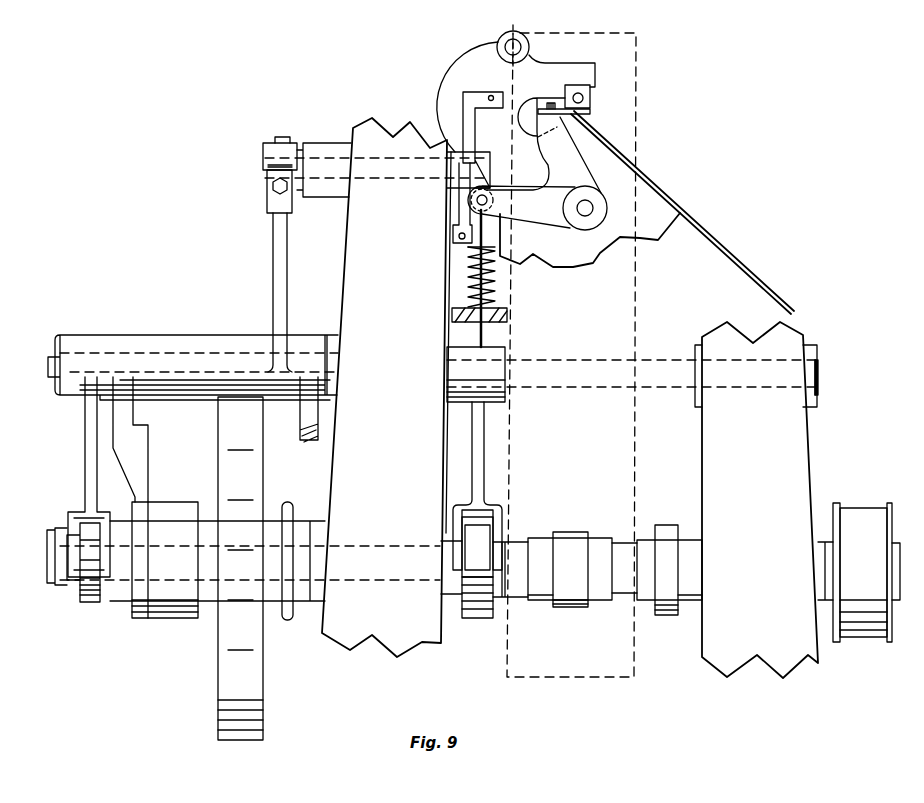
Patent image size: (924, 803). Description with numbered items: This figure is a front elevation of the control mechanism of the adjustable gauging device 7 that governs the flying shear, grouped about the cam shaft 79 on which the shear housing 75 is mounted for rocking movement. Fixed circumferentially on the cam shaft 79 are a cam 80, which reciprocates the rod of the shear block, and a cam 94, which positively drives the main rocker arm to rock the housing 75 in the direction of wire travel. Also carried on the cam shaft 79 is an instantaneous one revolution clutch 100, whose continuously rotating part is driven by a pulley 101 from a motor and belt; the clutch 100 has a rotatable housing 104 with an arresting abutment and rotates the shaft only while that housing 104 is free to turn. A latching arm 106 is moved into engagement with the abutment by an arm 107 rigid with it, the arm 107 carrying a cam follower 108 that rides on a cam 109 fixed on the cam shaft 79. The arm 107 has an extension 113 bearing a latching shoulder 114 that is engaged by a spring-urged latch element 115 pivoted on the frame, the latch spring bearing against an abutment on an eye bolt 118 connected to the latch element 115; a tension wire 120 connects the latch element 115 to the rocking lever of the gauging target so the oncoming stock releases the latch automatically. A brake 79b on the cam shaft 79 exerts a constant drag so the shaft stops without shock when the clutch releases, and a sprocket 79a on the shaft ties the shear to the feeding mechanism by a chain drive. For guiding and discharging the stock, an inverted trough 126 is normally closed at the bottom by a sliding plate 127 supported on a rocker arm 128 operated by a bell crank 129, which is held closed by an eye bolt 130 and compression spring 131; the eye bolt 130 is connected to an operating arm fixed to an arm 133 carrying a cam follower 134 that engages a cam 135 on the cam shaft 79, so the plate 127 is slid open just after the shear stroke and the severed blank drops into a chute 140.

The adjustable gauging device 7 is at (600, 75).
The housing 75 is at (638, 299).
The cam shaft 79 is at (370, 549).
The sprocket 79a is at (287, 612).
The brake 79b is at (863, 642).
The cam 80 is at (558, 601).
The cam 94 is at (665, 616).
The one revolution clutch 100 is at (162, 620).
The pulley 101 is at (263, 712).
The rotatable housing 104 is at (172, 502).
The arm 106 is at (148, 451).
The arm 107 is at (88, 437).
The cam follower 108 is at (85, 535).
The cam 109 is at (80, 596).
The extension 113 is at (273, 272).
The latching shoulder 114 is at (267, 185).
The latch element 115 is at (263, 157).
The eye bolt 118 is at (458, 238).
The tension wire 120 is at (493, 84).
The inverted trough 126 is at (591, 95).
The sliding plate 127 is at (592, 116).
The rocker arm 128 is at (548, 165).
The bell crank 129 is at (548, 205).
The eye bolt 130 is at (487, 340).
The compression spring 131 is at (496, 296).
The arm 133 is at (484, 484).
The cam follower 134 is at (487, 534).
The cam 135 is at (472, 619).
The chute 140 is at (720, 238).